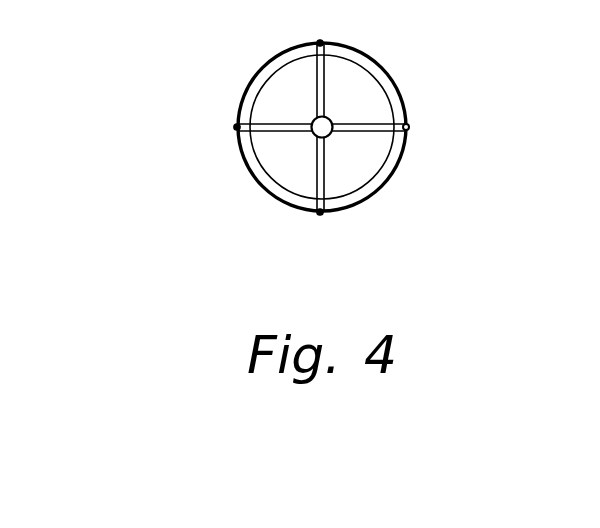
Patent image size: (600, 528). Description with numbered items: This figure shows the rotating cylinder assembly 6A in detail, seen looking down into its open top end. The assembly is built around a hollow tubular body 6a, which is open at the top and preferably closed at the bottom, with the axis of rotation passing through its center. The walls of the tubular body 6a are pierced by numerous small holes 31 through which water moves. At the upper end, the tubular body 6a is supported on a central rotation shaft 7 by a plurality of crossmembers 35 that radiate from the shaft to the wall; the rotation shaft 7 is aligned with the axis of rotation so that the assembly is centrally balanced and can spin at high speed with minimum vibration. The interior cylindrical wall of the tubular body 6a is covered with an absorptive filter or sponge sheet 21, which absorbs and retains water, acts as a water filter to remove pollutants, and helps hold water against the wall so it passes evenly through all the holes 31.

The rotating cylinder assembly 6A is at (264, 148).
The sponge sheet 21 is at (388, 82).
The crossmembers 35 is at (312, 93).
The rotation shaft 7 is at (329, 134).
The small holes 31 is at (244, 152).
The hollow tubular body 6a is at (335, 180).